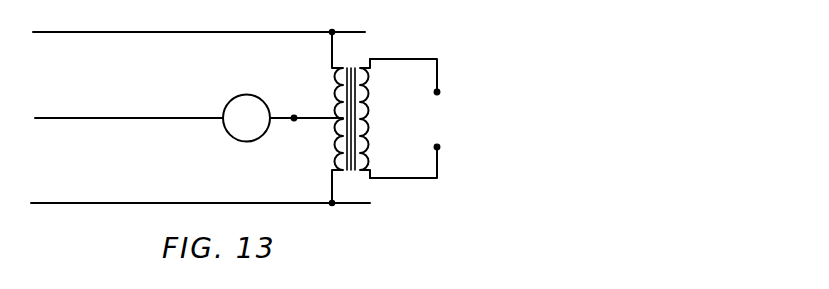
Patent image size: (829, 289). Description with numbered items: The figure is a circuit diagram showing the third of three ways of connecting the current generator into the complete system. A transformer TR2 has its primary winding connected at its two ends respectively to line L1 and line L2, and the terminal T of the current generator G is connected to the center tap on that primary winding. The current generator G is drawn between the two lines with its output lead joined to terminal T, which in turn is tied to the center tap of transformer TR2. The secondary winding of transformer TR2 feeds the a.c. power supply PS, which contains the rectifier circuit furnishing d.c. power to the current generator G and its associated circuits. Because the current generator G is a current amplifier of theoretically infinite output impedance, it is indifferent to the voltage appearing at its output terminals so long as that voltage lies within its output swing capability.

The line L1 is at (163, 32).
The line L2 is at (140, 203).
The current generator G is at (180, 118).
The terminal T is at (294, 117).
The transformer TR2 is at (333, 134).
The a.c. power supply PS is at (463, 82).